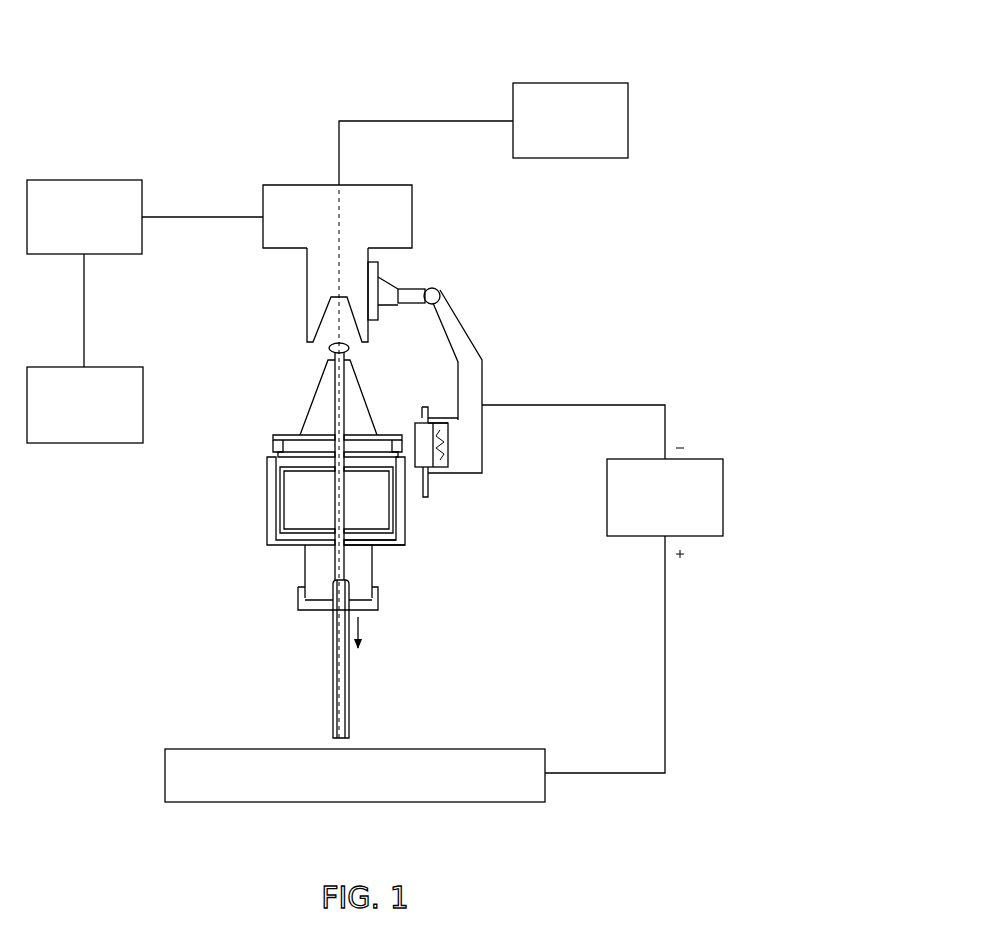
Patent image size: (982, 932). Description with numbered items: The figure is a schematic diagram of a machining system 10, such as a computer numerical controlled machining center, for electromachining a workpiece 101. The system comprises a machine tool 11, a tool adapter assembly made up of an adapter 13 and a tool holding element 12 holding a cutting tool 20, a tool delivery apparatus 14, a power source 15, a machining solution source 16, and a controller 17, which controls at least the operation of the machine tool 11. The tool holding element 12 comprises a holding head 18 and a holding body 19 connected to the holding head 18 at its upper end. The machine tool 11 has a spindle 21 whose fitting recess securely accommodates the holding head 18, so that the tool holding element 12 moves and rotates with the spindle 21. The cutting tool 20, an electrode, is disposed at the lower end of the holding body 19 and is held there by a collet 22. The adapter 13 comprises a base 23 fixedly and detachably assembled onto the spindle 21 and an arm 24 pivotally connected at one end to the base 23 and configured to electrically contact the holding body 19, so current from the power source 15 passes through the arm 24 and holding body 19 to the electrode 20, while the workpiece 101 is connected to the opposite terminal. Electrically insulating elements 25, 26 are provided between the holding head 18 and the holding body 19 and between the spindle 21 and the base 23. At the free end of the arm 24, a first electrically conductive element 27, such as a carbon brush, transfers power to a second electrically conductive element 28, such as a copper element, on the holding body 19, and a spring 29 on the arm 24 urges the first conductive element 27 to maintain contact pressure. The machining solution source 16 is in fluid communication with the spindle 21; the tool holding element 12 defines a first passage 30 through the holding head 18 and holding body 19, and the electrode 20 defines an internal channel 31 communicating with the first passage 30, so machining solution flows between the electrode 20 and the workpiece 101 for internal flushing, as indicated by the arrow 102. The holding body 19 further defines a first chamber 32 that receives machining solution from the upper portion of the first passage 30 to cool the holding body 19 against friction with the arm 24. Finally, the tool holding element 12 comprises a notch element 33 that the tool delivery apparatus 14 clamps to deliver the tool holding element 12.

The machining system 10 is at (176, 58).
The machine tool 11 is at (300, 183).
The tool holding element 12 is at (292, 555).
The adapter 13 is at (467, 332).
The tool delivery apparatus 14 is at (85, 447).
The power source 15 is at (607, 498).
The machining solution source 16 is at (568, 83).
The controller 17 is at (83, 180).
The holding head 18 is at (320, 400).
The holding body 19 is at (385, 548).
The cutting tool 20 is at (350, 710).
The spindle 21 is at (282, 240).
The collet 22 is at (306, 612).
The base 23 is at (398, 290).
The arm 24 is at (484, 375).
The electrically insulating element 25 is at (305, 472).
The electrically insulating element 26 is at (380, 320).
The first electrically conductive element 27 is at (413, 430).
The second electrically conductive element 28 is at (408, 520).
The spring 29 is at (450, 445).
The first passage 30 is at (335, 420).
The internal channel 31 is at (335, 705).
The first chamber 32 is at (325, 511).
The notch element 33 is at (285, 440).
The workpiece 101 is at (165, 772).
The arrow 102 is at (362, 637).